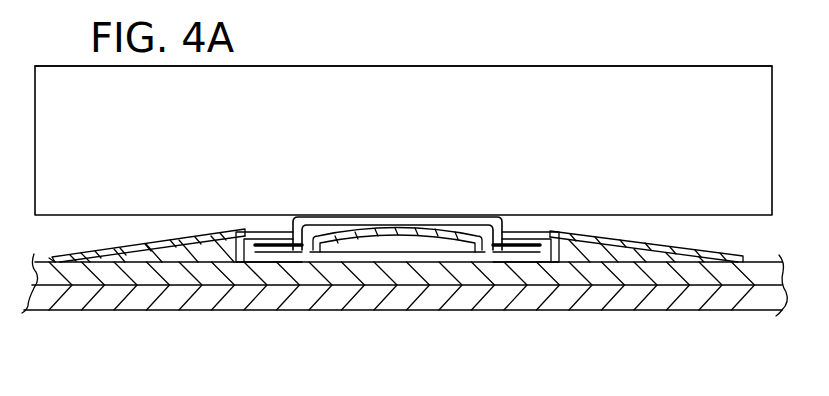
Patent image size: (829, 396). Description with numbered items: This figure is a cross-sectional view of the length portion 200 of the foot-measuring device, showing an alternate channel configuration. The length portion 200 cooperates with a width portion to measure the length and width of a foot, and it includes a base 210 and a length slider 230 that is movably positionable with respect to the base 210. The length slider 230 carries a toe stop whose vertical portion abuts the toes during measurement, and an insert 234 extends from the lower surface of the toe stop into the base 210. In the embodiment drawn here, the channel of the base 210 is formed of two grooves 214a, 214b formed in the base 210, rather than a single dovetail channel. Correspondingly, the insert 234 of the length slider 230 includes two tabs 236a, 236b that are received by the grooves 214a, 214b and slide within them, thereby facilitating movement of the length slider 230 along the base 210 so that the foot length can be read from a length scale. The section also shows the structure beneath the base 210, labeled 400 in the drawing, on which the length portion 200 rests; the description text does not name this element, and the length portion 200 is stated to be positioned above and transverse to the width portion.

The length portion 200 is at (683, 65).
The length slider 230 is at (456, 65).
The base 210 is at (112, 248).
The insert 234 is at (418, 222).
The groove 214a is at (253, 254).
The groove 214b is at (536, 254).
The tab 236a is at (277, 254).
The tab 236b is at (513, 254).
The substrate 400 is at (735, 311).